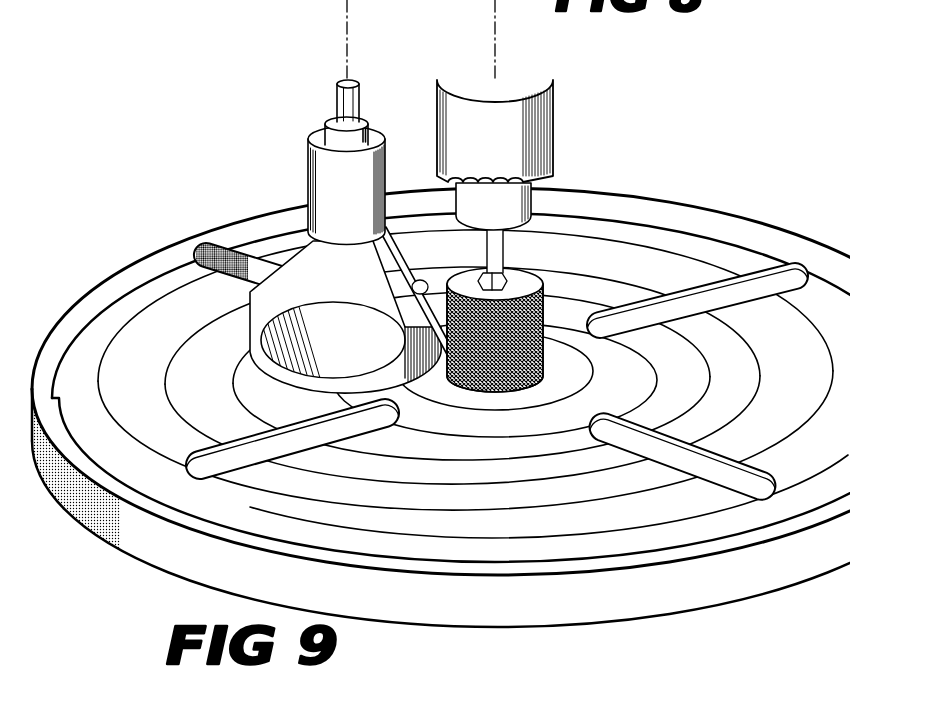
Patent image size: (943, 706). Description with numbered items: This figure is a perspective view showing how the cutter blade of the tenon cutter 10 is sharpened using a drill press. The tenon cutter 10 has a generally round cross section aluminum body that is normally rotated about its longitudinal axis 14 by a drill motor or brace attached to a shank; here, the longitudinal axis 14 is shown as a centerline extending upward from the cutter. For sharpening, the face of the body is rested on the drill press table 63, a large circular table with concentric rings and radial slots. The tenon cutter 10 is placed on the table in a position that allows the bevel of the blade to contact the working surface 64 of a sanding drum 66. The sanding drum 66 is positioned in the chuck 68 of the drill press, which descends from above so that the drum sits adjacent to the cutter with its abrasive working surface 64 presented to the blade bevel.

The tenon cutter 10 is at (329, 121).
The longitudinal axis 14 is at (344, 22).
The drill press table 63 is at (487, 388).
The working surface 64 is at (578, 350).
The sanding drum 66 is at (521, 283).
The chuck 68 is at (504, 118).